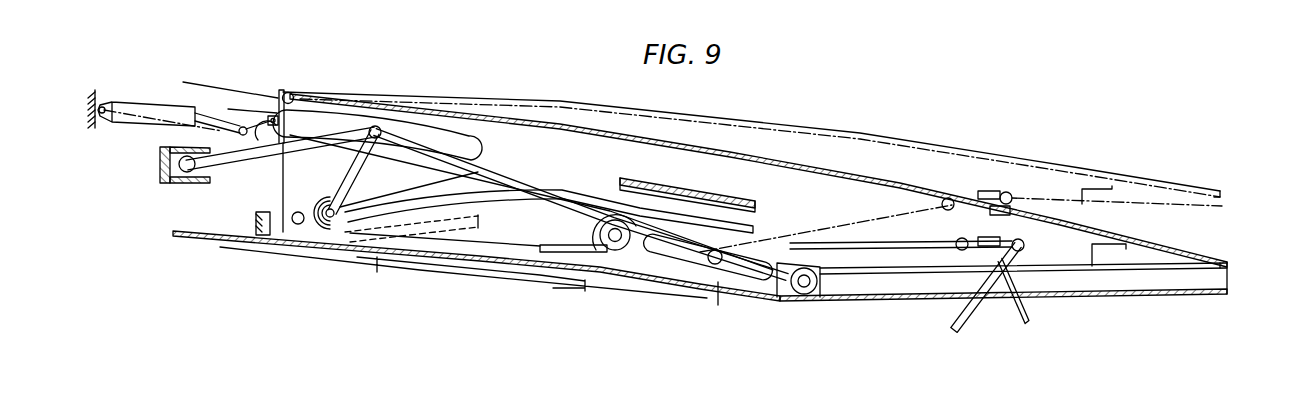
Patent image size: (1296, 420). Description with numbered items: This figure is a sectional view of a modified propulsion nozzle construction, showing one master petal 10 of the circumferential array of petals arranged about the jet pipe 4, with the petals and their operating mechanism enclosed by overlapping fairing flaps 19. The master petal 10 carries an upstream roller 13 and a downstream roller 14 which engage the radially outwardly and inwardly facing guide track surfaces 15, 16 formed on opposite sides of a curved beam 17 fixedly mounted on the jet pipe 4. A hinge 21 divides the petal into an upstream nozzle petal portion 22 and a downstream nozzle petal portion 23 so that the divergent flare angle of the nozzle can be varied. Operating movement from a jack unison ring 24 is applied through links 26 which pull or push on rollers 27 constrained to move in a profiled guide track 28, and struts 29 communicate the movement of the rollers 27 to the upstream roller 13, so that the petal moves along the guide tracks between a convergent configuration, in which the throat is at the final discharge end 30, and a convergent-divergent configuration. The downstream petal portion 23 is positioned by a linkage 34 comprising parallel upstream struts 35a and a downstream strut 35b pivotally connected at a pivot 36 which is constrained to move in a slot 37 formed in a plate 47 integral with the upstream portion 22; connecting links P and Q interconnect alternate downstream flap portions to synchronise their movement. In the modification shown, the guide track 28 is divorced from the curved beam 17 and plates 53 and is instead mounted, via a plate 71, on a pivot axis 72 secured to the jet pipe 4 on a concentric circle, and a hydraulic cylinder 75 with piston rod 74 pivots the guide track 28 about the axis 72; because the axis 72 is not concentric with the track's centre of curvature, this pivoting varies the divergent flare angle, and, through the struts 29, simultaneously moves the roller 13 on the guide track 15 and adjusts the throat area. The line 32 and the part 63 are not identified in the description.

The jet pipe 4 is at (540, 262).
The master petal 10 is at (1184, 296).
The upstream roller 13 is at (304, 231).
The downstream roller 14 is at (628, 257).
The guide track surface 15 is at (560, 186).
The guide track surface 16 is at (472, 235).
The curved beam 17 is at (443, 224).
The fairing flap 19 is at (778, 152).
The hinge 21 is at (807, 300).
The upstream nozzle petal portion 22 is at (608, 252).
The downstream nozzle petal portion 23 is at (1060, 292).
The jack unison ring 24 is at (162, 164).
The link 26 is at (228, 168).
The roller 27 is at (378, 126).
The guide track 28 is at (467, 143).
The strut 29 is at (350, 177).
The final discharge end 30 is at (1233, 280).
The centerline 32 is at (1224, 206).
The linkage 34 is at (492, 176).
The upstream strut 35a is at (548, 185).
The downstream strut 35b is at (817, 240).
The pivot 36 is at (730, 284).
The slot 37 is at (779, 284).
The plate 47 is at (530, 237).
The plate 53 is at (625, 176).
The pivot 63 is at (290, 93).
The plate 71 is at (292, 181).
The pivot axis 72 is at (293, 224).
The piston rod 74 is at (224, 112).
The hydraulic cylinder 75 is at (136, 112).
The connecting link P is at (1017, 323).
The connecting link Q is at (955, 330).